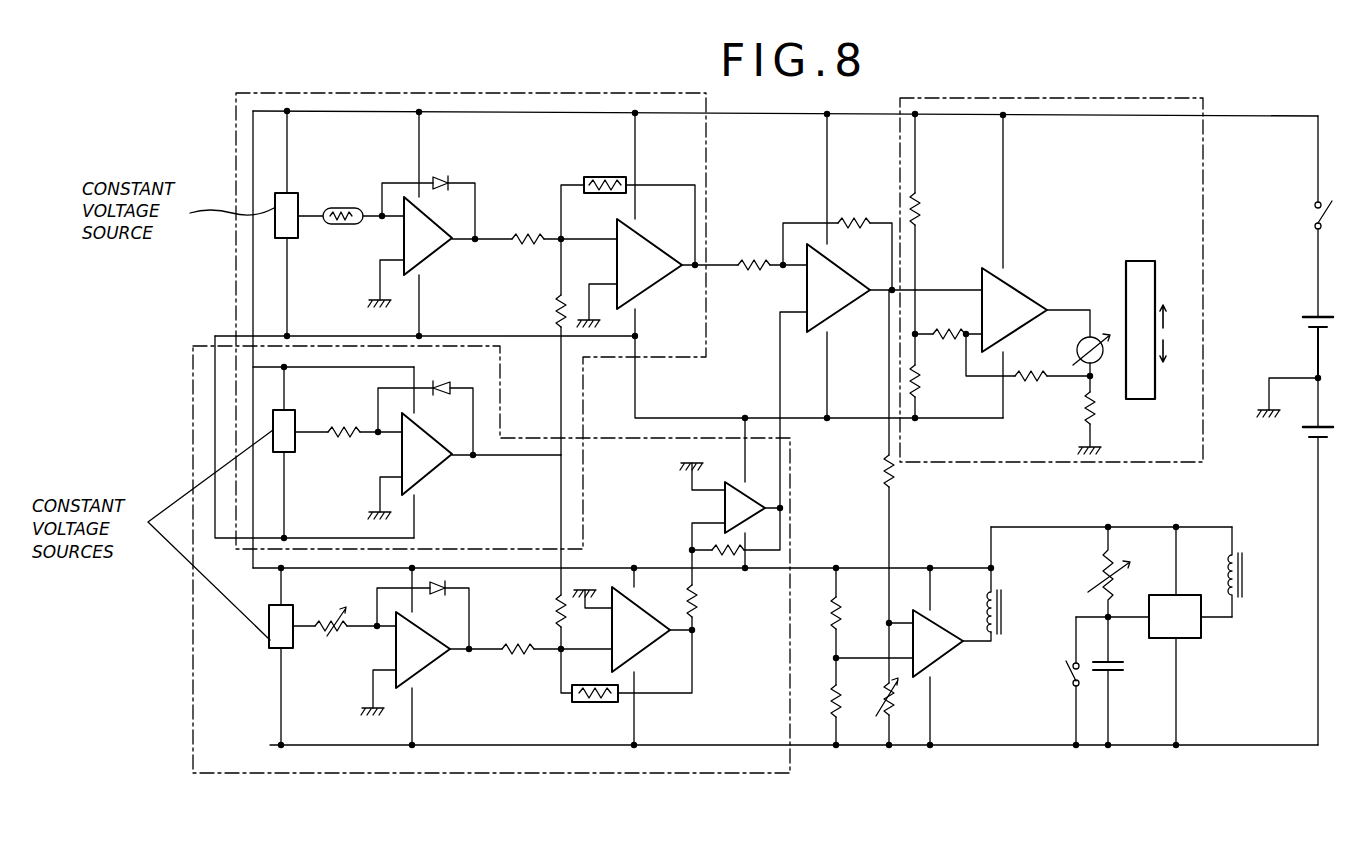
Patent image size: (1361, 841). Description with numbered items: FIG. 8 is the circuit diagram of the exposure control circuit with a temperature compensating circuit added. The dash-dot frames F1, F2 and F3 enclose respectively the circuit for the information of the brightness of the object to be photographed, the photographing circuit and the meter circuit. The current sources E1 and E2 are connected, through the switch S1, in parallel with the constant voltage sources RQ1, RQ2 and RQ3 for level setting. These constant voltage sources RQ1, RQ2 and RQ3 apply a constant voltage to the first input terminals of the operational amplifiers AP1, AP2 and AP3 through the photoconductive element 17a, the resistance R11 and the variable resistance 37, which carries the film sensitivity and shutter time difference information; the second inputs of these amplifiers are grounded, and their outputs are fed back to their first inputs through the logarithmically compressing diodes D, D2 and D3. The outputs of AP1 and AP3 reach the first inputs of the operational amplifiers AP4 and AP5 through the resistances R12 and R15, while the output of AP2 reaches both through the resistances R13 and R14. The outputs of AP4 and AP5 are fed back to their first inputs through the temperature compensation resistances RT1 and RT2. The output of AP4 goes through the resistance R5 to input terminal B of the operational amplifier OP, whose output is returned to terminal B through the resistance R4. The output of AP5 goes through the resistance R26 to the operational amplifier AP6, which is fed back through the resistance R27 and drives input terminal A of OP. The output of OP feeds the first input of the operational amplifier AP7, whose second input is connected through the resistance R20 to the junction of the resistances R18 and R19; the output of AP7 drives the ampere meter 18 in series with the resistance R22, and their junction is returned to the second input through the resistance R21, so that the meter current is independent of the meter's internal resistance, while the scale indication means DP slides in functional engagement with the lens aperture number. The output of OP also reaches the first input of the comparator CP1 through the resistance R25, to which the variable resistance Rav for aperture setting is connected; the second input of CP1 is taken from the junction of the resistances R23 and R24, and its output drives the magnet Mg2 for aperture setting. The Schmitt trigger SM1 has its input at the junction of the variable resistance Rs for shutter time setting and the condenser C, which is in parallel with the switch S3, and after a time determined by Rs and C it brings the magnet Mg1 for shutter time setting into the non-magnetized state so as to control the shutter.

The brightness information circuit F1 is at (708, 105).
The photographing circuit F2 is at (193, 358).
The meter circuit F3 is at (1213, 103).
The constant voltage source RQ1 is at (298, 228).
The constant voltage source RQ2 is at (295, 440).
The constant voltage source RQ3 is at (270, 648).
The photoconductive element 17a is at (340, 202).
The ampere meter 18 is at (1066, 350).
The variable resistance 37 is at (336, 634).
The logarithmically compressing diode D is at (428, 198).
The logarithmically compressing diode D2 is at (427, 409).
The logarithmically compressing diode D3 is at (424, 616).
The operational amplifier AP1 is at (440, 224).
The operational amplifier AP2 is at (464, 452).
The operational amplifier AP3 is at (431, 656).
The operational amplifier AP4 is at (657, 224).
The operational amplifier AP5 is at (632, 656).
The operational amplifier AP6 is at (726, 512).
The operational amplifier AP7 is at (1036, 266).
The operational amplifier OP is at (881, 311).
The comparator CP1 is at (940, 656).
The resistance R4 is at (839, 243).
The resistance R5 is at (772, 253).
The resistance R11 is at (348, 420).
The resistance R12 is at (564, 227).
The resistance R13 is at (542, 347).
The resistance R14 is at (542, 552).
The resistance R15 is at (557, 664).
The resistance R18 is at (937, 224).
The resistance R19 is at (937, 376).
The resistance R20 is at (947, 322).
The resistance R21 is at (1029, 357).
The resistance R22 is at (1072, 415).
The resistance R23 is at (855, 614).
The resistance R24 is at (819, 701).
The resistance R25 is at (874, 456).
The resistance R26 is at (712, 591).
The resistance R27 is at (724, 556).
The variable resistance for aperture setting Rav is at (904, 682).
The variable resistance for shutter time setting Rs is at (1099, 572).
The temperature compensation resistance RT1 is at (629, 210).
The temperature compensation resistance RT2 is at (628, 677).
The scale indication means DP is at (1140, 261).
The switch S1 is at (1314, 221).
The switch S3 is at (1056, 681).
The current source E1 is at (1303, 323).
The current source E2 is at (1303, 443).
The condenser C is at (1116, 681).
The Schmitt trigger SM1 is at (1190, 636).
The magnet for shutter time setting Mg1 is at (1259, 572).
The magnet for aperture setting Mg2 is at (1019, 580).